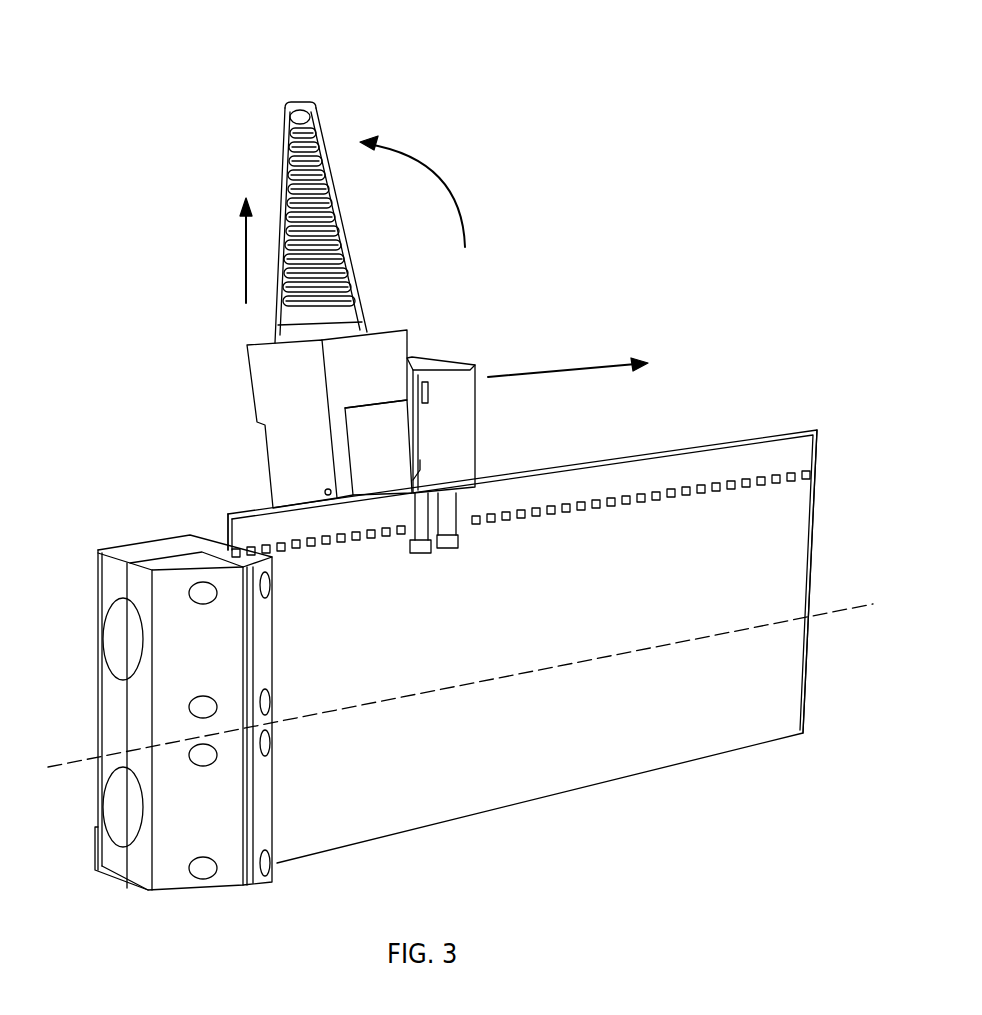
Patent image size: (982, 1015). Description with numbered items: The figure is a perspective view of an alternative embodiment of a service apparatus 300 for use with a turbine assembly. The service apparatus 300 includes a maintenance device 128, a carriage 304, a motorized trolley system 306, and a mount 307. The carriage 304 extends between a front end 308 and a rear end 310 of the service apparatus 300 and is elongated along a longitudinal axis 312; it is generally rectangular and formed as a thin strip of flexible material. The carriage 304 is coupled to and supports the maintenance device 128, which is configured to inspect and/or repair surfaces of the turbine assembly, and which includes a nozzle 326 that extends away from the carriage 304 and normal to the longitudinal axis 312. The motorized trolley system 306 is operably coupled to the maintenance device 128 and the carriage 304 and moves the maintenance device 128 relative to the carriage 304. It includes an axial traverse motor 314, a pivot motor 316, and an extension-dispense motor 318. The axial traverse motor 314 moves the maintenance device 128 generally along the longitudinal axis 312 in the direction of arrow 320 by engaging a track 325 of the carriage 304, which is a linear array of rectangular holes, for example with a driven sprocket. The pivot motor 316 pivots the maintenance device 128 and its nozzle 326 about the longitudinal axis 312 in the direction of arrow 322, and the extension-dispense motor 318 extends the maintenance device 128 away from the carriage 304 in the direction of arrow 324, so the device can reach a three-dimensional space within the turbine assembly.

The service apparatus 300 is at (160, 47).
The carriage 304 is at (735, 717).
The motorized trolley system 306 is at (505, 342).
The mount 307 is at (117, 718).
The front end 308 is at (817, 557).
The rear end 310 is at (222, 527).
The longitudinal axis 312 is at (75, 767).
The axial traverse motor 314 is at (443, 437).
The pivot motor 316 is at (382, 440).
The extension-dispense motor 318 is at (277, 387).
The arrow 320 is at (618, 361).
The arrow 322 is at (455, 198).
The arrow 324 is at (245, 268).
The track 325 is at (752, 475).
The nozzle 326 is at (293, 104).
The maintenance device 128 is at (357, 223).